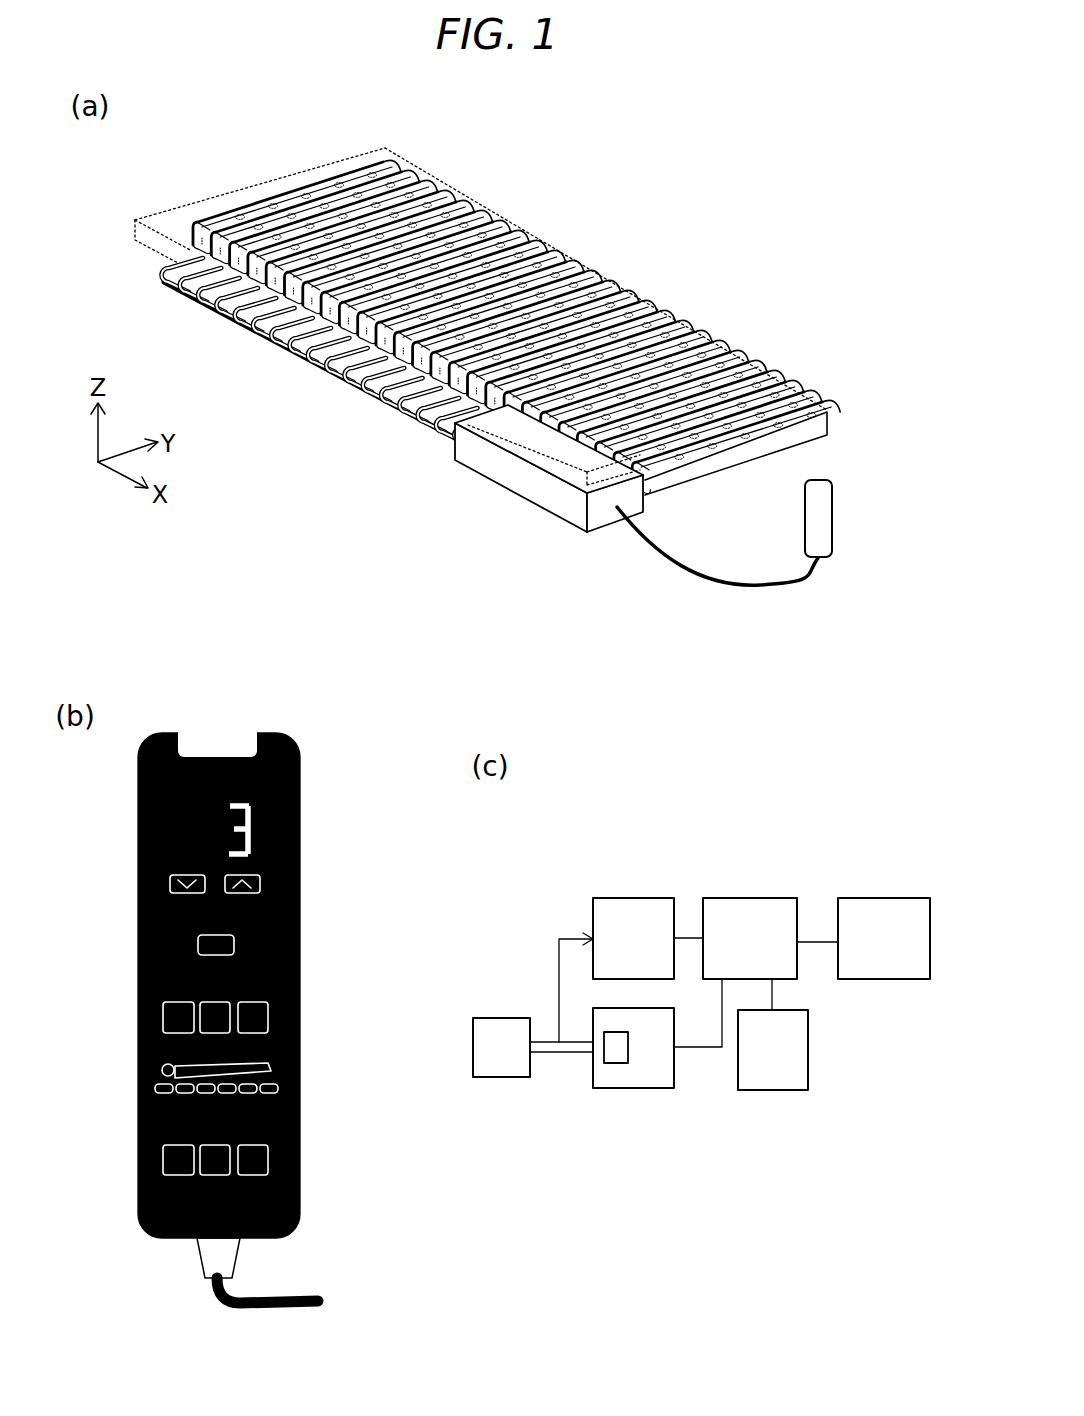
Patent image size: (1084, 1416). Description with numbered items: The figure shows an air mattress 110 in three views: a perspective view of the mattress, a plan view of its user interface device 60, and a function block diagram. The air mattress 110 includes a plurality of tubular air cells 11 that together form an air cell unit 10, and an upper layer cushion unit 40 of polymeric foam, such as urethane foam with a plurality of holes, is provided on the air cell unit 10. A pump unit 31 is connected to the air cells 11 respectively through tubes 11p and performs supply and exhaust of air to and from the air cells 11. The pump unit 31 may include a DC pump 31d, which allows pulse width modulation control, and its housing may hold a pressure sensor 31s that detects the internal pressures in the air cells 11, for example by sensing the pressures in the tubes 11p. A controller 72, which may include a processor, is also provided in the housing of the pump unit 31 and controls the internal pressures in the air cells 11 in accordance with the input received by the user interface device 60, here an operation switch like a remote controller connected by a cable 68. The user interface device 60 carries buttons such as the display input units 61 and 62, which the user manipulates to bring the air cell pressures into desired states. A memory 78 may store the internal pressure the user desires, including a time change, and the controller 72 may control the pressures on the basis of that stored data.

The air cell unit 10 is at (310, 167).
The air cell 11 is at (238, 215).
The tube 11p is at (166, 270).
The upper layer cushion unit 40 is at (163, 209).
The air mattress 110 is at (712, 213).
The pump unit 31 is at (517, 475).
The pressure sensor 31s is at (633, 898).
The DC pump 31d is at (619, 1063).
The user interface device 60 is at (842, 508).
The display input unit 61 is at (170, 880).
The display input unit 62 is at (260, 883).
The cable 68 is at (760, 587).
The controller 72 is at (753, 898).
The memory 78 is at (772, 1090).